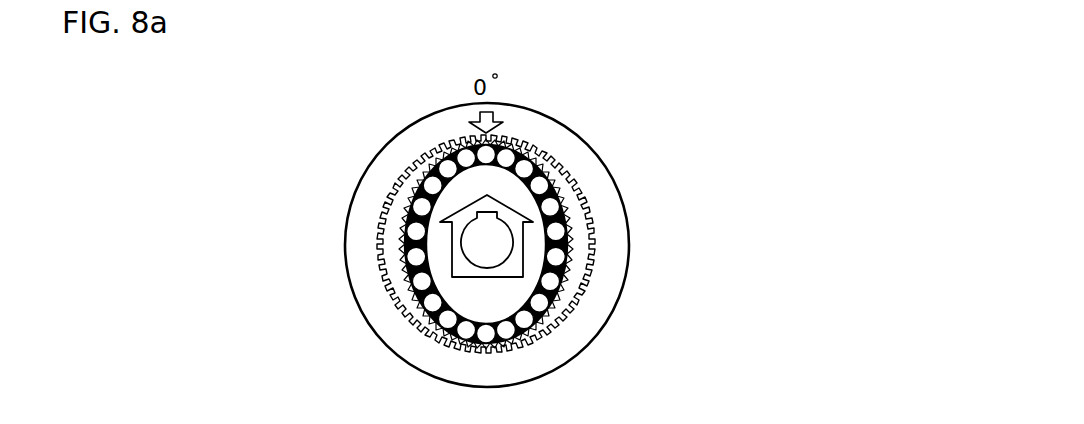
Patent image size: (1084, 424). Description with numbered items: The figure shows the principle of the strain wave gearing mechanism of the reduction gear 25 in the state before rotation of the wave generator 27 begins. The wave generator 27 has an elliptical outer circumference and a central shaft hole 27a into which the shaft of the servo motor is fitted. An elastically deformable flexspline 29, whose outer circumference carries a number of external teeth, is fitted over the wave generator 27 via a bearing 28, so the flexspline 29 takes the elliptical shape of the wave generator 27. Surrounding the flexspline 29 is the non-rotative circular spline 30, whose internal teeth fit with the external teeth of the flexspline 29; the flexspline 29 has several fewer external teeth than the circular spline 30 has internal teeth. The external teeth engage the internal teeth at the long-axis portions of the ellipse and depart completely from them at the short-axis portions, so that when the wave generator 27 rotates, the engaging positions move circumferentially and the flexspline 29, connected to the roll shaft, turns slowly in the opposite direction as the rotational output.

The reduction gear 25 is at (353, 330).
The wave generator 27 is at (531, 258).
The shaft hole 27a is at (478, 247).
The bearing 28 is at (570, 215).
The flexspline 29 is at (557, 158).
The circular spline 30 is at (595, 173).